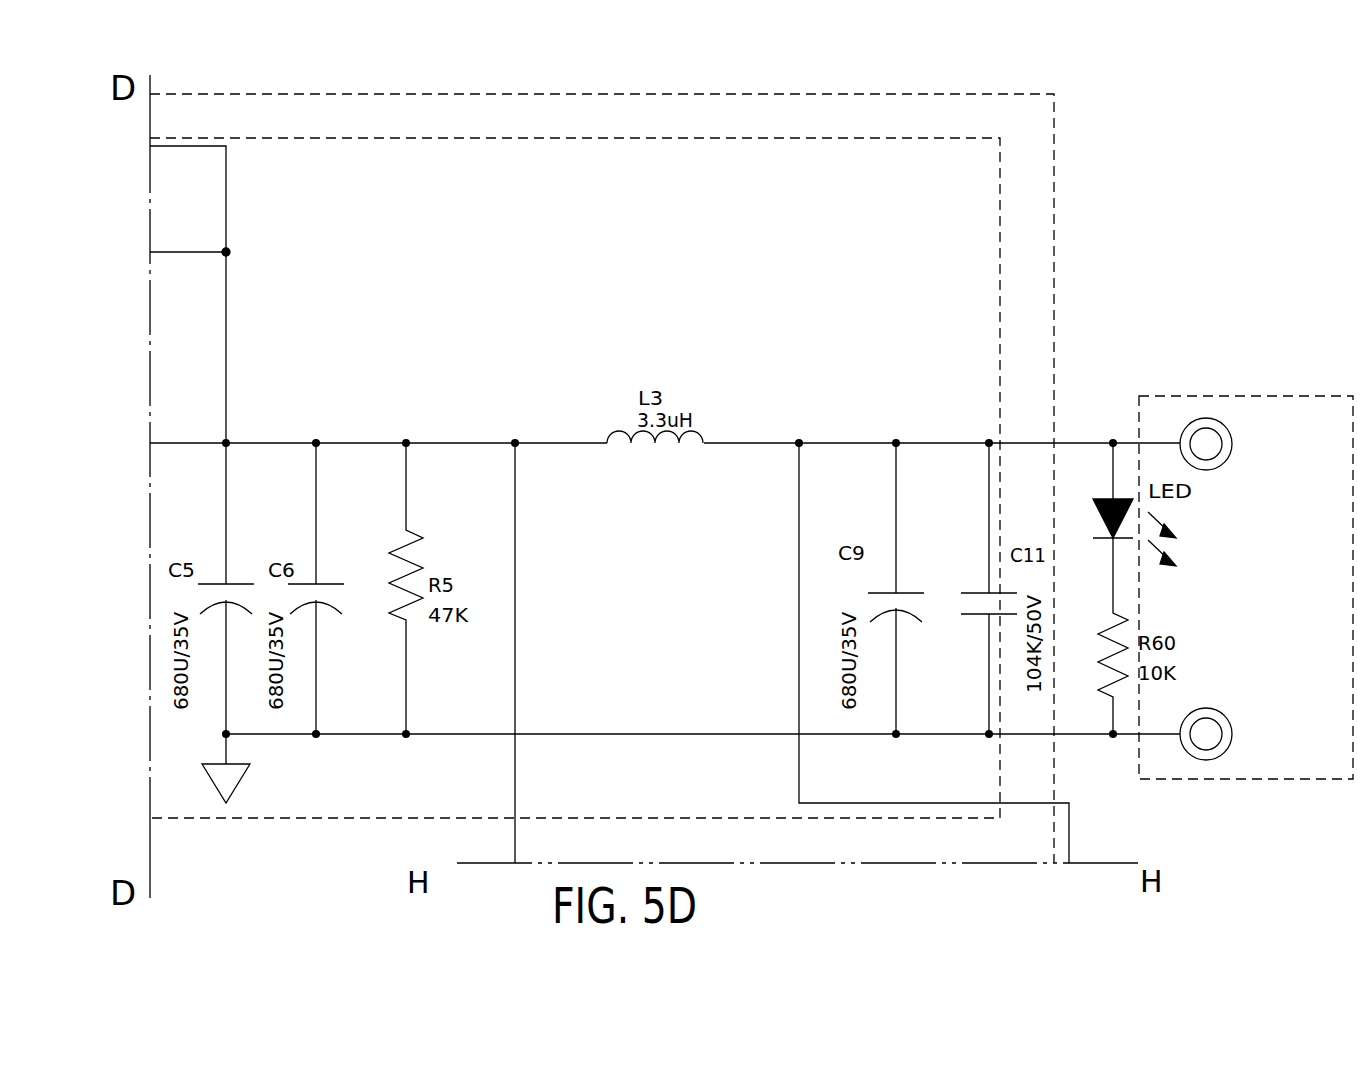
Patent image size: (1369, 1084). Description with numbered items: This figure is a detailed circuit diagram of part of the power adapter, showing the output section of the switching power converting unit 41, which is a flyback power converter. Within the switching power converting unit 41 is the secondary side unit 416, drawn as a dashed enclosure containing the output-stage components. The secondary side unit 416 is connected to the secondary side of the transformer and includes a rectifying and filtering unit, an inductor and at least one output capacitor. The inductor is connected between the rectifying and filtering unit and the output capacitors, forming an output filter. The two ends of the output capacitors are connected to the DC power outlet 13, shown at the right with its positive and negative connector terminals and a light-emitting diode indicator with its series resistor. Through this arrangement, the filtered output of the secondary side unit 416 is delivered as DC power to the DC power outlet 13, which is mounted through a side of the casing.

The switching power converting unit 41 is at (688, 94).
The secondary side unit 416 is at (935, 138).
The DC power outlet 13 is at (1208, 396).